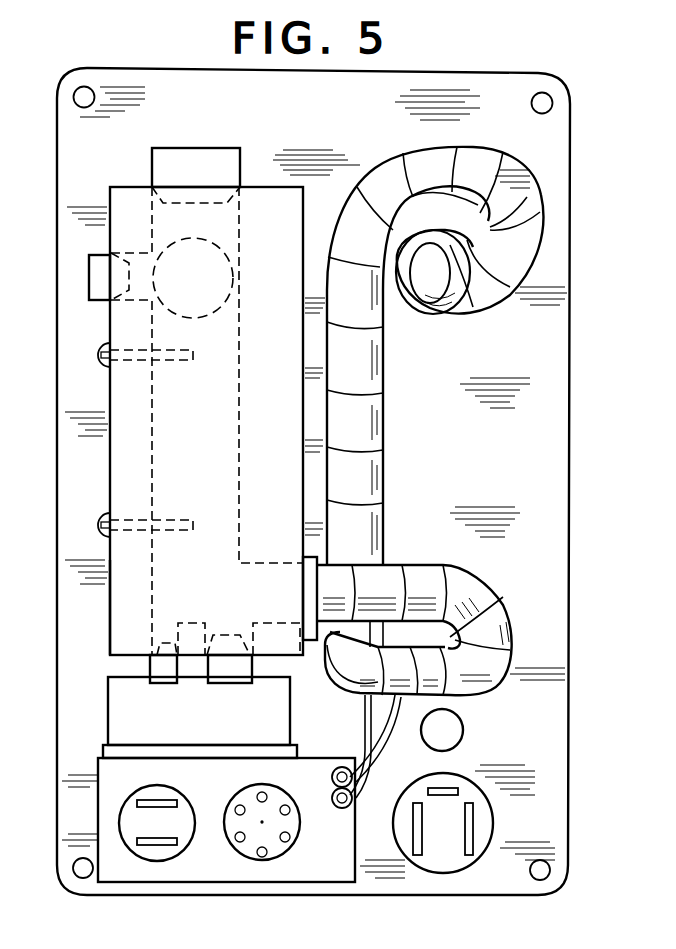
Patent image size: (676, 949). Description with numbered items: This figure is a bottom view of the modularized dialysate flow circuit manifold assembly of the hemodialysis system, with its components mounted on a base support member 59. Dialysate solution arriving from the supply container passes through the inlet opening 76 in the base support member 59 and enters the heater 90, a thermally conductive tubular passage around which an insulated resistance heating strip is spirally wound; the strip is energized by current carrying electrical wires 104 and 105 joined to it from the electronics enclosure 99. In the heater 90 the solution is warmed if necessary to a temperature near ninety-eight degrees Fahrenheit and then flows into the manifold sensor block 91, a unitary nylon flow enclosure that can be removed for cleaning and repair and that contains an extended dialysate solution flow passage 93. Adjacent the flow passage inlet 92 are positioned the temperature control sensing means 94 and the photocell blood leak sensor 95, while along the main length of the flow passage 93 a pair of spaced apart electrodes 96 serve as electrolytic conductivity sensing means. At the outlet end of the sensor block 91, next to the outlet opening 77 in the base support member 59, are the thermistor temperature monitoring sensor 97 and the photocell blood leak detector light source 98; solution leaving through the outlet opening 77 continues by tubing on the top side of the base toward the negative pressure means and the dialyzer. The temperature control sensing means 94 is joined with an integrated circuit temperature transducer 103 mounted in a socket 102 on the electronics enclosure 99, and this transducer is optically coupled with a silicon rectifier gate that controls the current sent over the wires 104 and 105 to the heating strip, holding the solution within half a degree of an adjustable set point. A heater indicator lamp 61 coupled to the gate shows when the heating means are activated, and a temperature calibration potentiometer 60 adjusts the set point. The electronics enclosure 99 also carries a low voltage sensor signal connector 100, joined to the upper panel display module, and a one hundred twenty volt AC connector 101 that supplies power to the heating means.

The base support member 59 is at (553, 483).
The temperature calibration potentiometer 60 is at (438, 868).
The heater indicator lamp 61 is at (438, 732).
The inlet opening 76 is at (440, 317).
The outlet opening 77 is at (189, 253).
The heater 90 is at (372, 378).
The manifold sensor block 91 is at (118, 608).
The flow passage inlet 92 is at (280, 613).
The dialysate solution flow passage 93 is at (223, 413).
The temperature control sensing means 94 is at (220, 675).
The blood leak sensor 95 is at (157, 675).
The electrodes 96 is at (100, 358).
The thermistor temperature monitoring sensor 97 is at (98, 275).
The photocell blood leak detector light source 98 is at (192, 158).
The electronics enclosure 99 is at (200, 875).
The low voltage sensor signal connector 100 is at (262, 857).
The 120 volt AC connector 101 is at (147, 853).
The socket 102 is at (103, 750).
The integrated circuit temperature transducer 103 is at (117, 697).
The electrical wire 104 is at (382, 755).
The electrical wire 105 is at (362, 722).